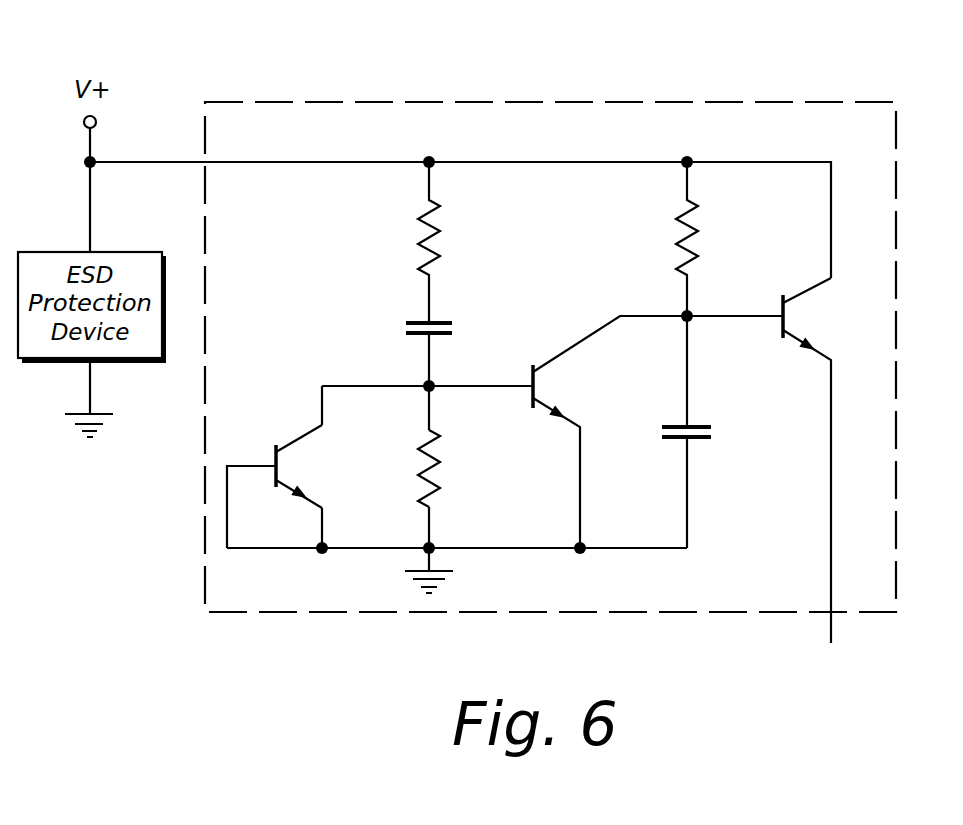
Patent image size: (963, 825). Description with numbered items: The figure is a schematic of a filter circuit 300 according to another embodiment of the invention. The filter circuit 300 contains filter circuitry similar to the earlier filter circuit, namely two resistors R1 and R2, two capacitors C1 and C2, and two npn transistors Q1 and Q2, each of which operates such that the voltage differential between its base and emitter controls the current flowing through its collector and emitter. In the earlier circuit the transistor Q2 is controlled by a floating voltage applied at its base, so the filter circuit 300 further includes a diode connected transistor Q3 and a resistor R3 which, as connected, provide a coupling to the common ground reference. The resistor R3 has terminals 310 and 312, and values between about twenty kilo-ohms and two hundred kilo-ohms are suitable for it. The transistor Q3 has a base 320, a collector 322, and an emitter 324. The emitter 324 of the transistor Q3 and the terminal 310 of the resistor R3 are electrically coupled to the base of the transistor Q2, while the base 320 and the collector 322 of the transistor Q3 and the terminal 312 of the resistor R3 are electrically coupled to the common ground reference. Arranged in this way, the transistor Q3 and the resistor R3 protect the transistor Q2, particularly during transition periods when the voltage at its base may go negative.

The filter circuit 300 is at (584, 102).
The terminal of resistor R3 310 is at (432, 413).
The terminal of resistor R3 312 is at (432, 525).
The base of transistor Q3 320 is at (275, 465).
The collector of transistor Q3 322 is at (323, 525).
The emitter of transistor Q3 324 is at (323, 411).
The resistor R1 is at (695, 240).
The resistor R2 is at (440, 238).
The resistor R3 is at (440, 468).
The capacitor C1 is at (702, 427).
The capacitor C2 is at (378, 314).
The npn transistor Q1 is at (792, 317).
The npn transistor Q2 is at (537, 386).
The diode connected transistor Q3 is at (282, 470).